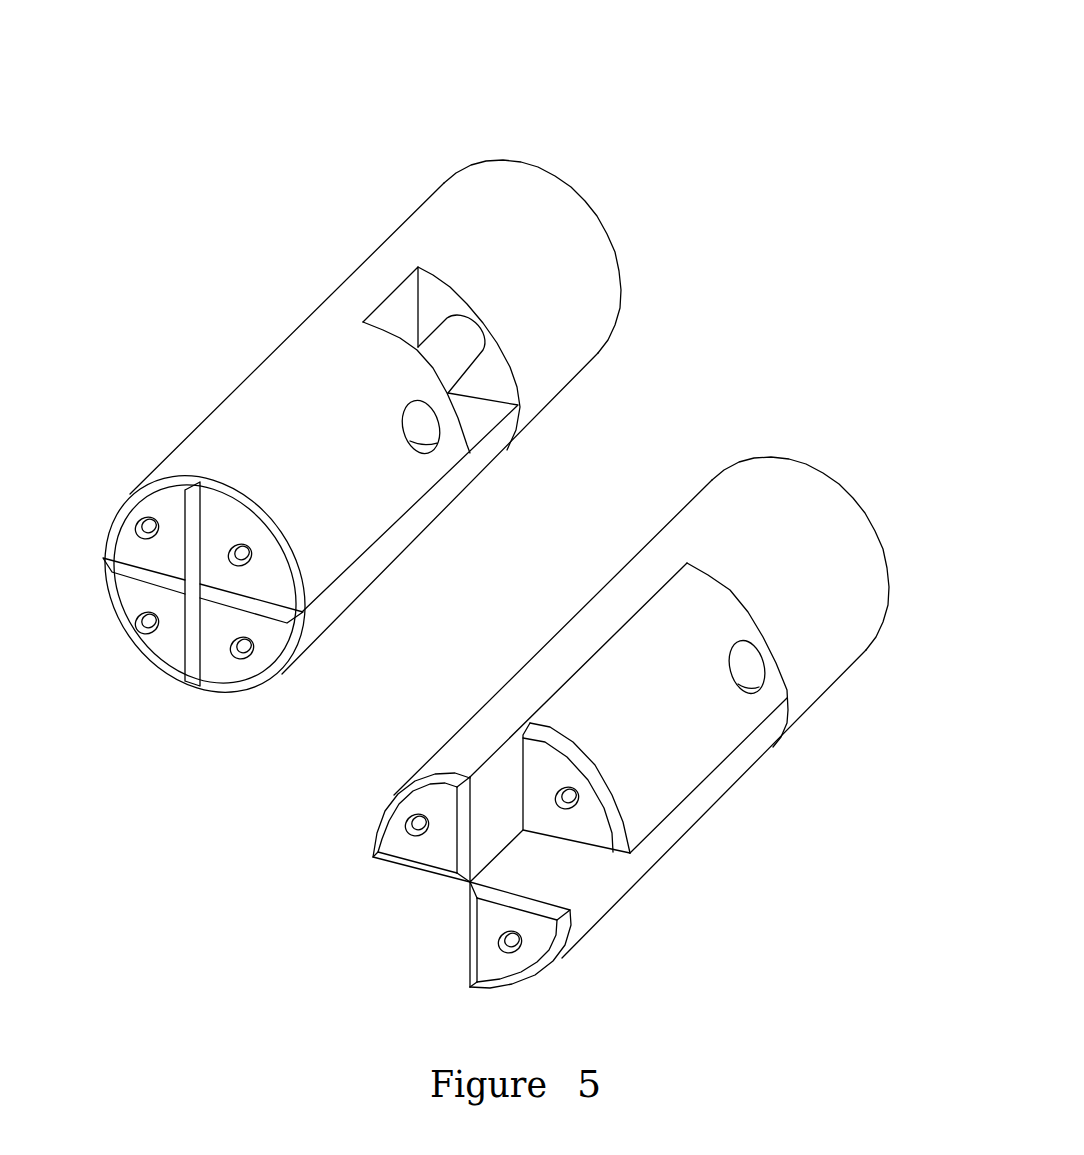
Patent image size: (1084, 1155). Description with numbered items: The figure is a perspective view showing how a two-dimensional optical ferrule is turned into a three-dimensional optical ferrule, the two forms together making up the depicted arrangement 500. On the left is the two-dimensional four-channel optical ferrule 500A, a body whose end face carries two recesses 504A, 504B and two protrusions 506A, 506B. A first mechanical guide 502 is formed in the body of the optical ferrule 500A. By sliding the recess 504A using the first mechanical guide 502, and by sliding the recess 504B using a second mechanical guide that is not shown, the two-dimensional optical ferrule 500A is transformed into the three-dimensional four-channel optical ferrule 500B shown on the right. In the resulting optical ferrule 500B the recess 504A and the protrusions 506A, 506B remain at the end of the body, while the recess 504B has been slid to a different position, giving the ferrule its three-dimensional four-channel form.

The connector assembly 500 is at (668, 72).
The 2D four-channel optical ferrule 500A is at (294, 248).
The 3D four-channel optical ferrule 500B is at (828, 500).
The first mechanical guide 502 is at (462, 342).
The recess 504A is at (250, 552).
The recess 504B is at (150, 632).
The protrusion 506A is at (146, 526).
The protrusion 506B is at (252, 642).